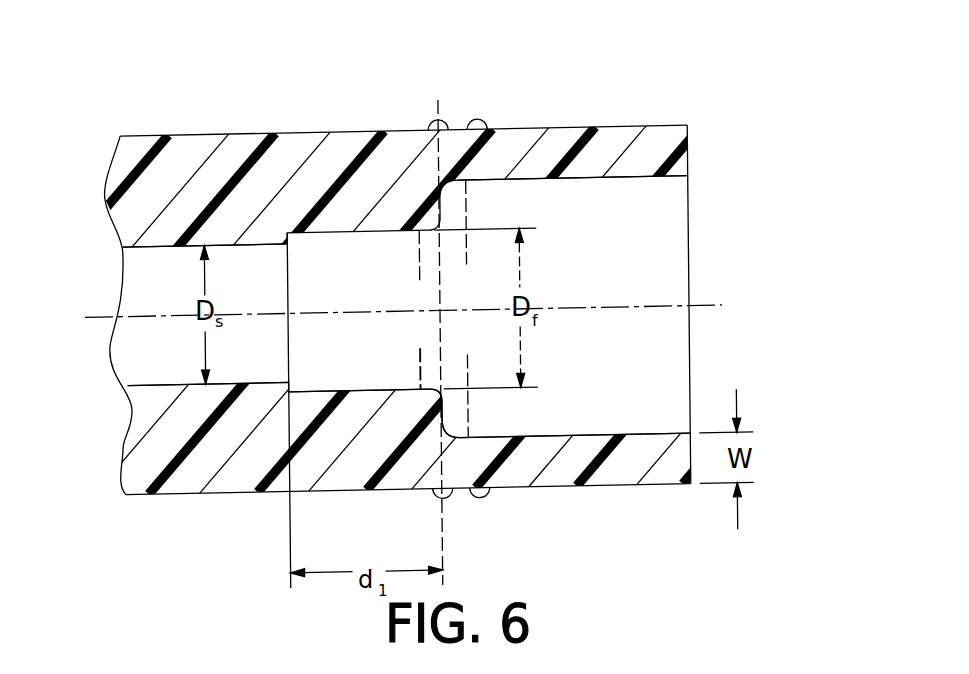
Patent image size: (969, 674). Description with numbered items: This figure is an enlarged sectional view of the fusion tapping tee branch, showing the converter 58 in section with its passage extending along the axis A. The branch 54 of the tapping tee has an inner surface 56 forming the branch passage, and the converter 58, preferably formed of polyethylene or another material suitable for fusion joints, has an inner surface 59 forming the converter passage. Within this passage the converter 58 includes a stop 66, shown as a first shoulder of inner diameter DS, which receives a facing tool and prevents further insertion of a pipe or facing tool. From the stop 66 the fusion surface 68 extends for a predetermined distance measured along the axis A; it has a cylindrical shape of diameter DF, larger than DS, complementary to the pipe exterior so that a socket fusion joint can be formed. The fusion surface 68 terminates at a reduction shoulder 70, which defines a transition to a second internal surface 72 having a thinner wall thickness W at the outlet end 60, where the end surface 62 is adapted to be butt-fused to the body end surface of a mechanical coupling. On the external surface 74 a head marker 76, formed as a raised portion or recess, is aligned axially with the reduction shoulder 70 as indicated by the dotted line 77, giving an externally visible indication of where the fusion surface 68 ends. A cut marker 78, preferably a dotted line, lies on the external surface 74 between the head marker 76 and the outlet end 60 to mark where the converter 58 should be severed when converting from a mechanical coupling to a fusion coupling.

The branch 54 is at (264, 131).
The inner surface 56 is at (134, 361).
The converter 58 is at (324, 96).
The inner surface 59 is at (684, 353).
The outlet end 60 is at (604, 127).
The end surface 62 is at (688, 162).
The stop 66 is at (291, 246).
The fusion surface 68 is at (407, 390).
The reduction shoulder 70 is at (444, 422).
The second internal surface 72 is at (582, 435).
The external surface 74 is at (612, 486).
The head marker 76 is at (431, 121).
The dotted line 77 is at (443, 470).
The cut marker 78 is at (482, 121).
The axis A is at (706, 305).